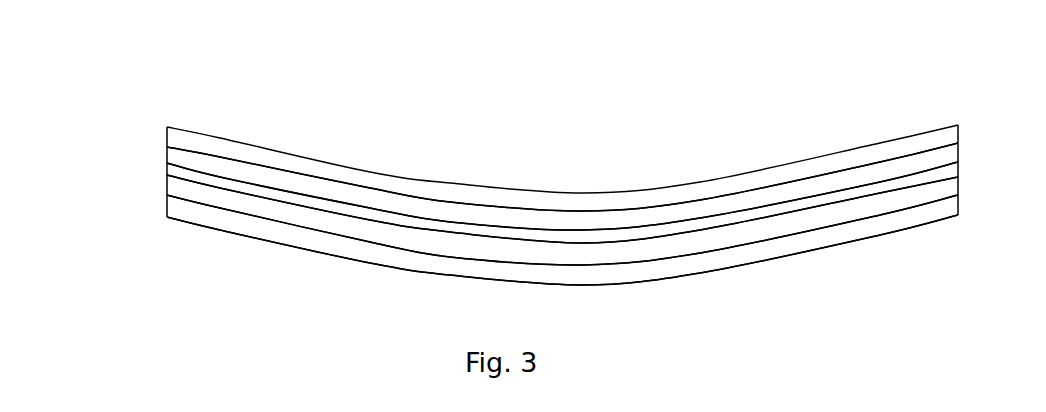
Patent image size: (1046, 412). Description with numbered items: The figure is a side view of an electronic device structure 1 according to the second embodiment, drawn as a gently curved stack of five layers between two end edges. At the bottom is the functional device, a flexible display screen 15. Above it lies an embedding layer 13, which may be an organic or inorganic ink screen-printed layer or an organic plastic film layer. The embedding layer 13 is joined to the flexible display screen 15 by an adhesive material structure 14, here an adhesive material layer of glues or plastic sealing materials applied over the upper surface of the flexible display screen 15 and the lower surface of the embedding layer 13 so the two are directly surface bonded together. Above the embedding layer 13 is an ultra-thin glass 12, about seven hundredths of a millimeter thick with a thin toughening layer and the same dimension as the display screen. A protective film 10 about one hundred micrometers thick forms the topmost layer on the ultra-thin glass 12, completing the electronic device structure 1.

The electronic device structure 1 is at (501, 182).
The protective film 10 is at (167, 127).
The ultra-thin glass 12 is at (167, 147).
The embedding layer 13 is at (176, 174).
The adhesive material structure 14 is at (180, 188).
The flexible display screen 15 is at (176, 211).